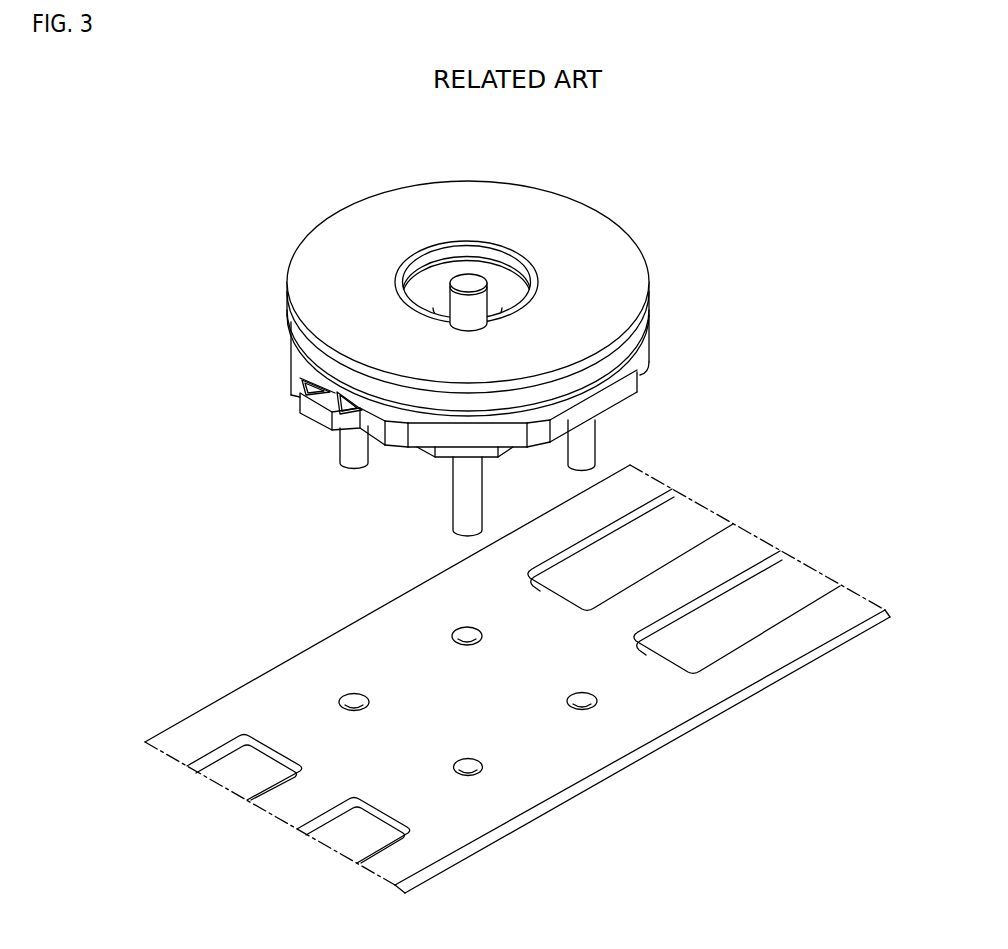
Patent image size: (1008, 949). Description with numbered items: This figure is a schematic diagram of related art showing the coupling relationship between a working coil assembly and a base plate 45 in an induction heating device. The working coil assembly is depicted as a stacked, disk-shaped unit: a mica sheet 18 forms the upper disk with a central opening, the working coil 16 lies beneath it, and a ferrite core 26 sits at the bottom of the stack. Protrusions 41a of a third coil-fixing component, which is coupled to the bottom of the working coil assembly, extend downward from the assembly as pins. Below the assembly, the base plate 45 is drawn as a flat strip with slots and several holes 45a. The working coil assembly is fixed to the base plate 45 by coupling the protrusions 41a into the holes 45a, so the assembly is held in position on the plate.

The mica sheet 18 is at (612, 250).
The working coil 16 is at (633, 332).
The ferrite core 26 is at (642, 357).
The protrusions 41a is at (348, 453).
The base plate 45 is at (645, 718).
The holes 45a is at (465, 770).